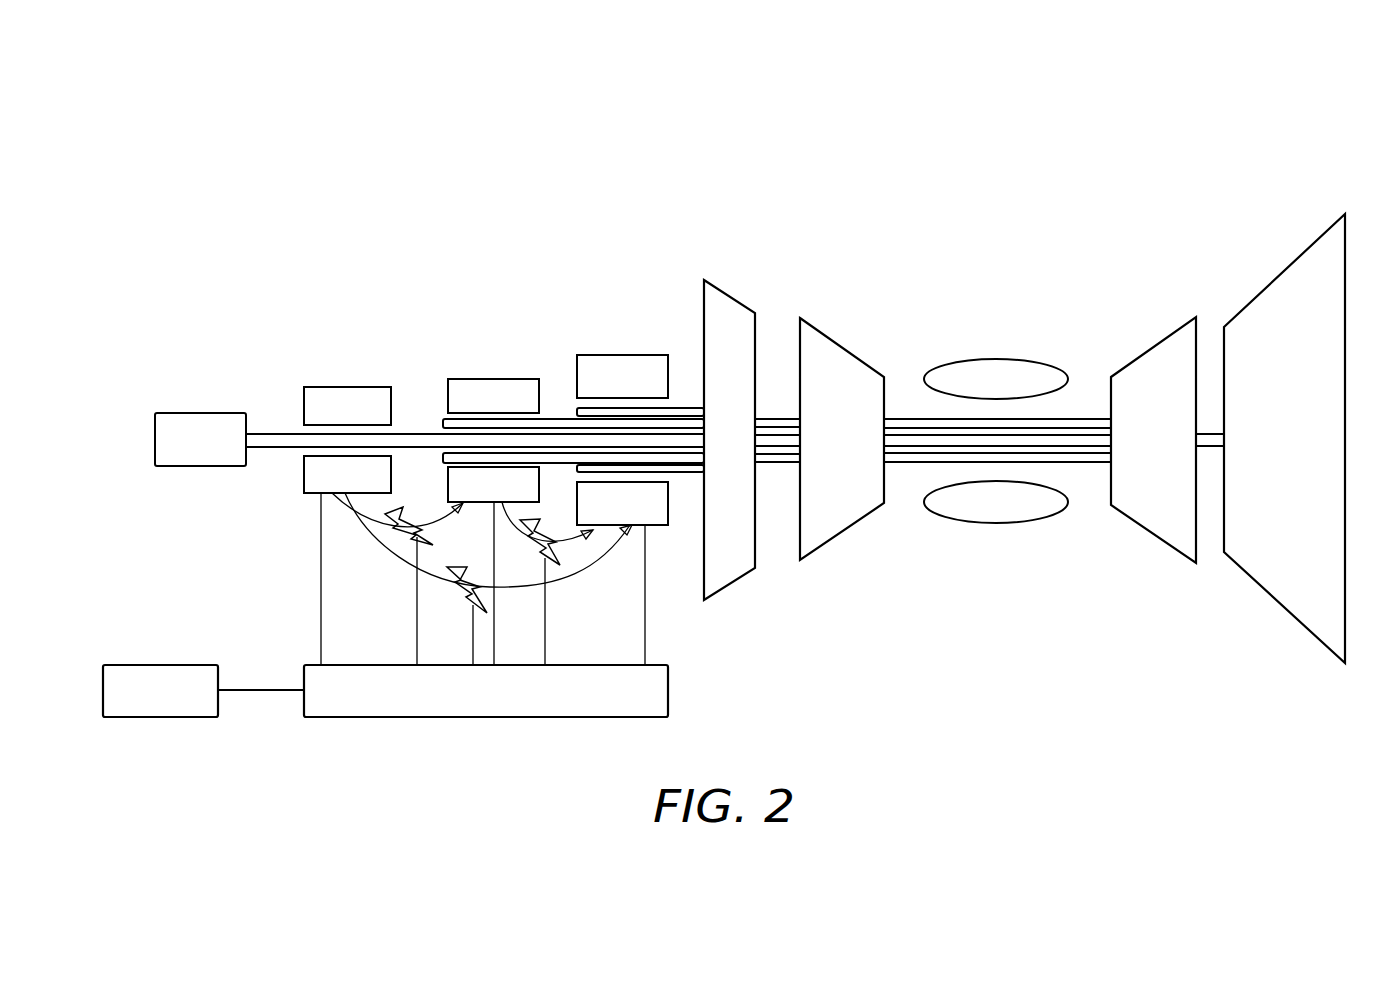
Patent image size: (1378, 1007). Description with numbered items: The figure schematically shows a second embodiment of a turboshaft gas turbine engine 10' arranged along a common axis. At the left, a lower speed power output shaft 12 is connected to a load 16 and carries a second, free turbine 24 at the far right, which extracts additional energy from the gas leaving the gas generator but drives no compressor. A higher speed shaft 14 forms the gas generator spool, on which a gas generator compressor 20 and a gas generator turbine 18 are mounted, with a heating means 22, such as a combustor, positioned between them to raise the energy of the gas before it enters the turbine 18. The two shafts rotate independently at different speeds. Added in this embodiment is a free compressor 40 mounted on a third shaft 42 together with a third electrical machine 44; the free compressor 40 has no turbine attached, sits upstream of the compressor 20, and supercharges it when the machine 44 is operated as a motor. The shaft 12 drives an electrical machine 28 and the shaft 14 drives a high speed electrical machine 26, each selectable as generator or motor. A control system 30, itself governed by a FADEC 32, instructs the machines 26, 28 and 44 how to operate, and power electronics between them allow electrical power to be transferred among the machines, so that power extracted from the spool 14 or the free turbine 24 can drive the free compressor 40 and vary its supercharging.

The gas turbine engine 10' is at (846, 127).
The shaft 12 is at (268, 432).
The shaft 14 is at (1093, 418).
The load 16 is at (202, 412).
The gas generator turbine 18 is at (1144, 353).
The gas generator compressor 20 is at (850, 352).
The means for heating the gas 22 is at (1000, 359).
The second turbine 24 is at (1262, 290).
The high speed electrical machine 26 is at (492, 379).
The electrical machine 28 is at (350, 387).
The control system 30 is at (668, 688).
The full authority digital electronic control (FADEC) 32 is at (160, 665).
The free compressor 40 is at (735, 300).
The third shaft 42 is at (683, 474).
The third electrical machine 44 is at (613, 355).